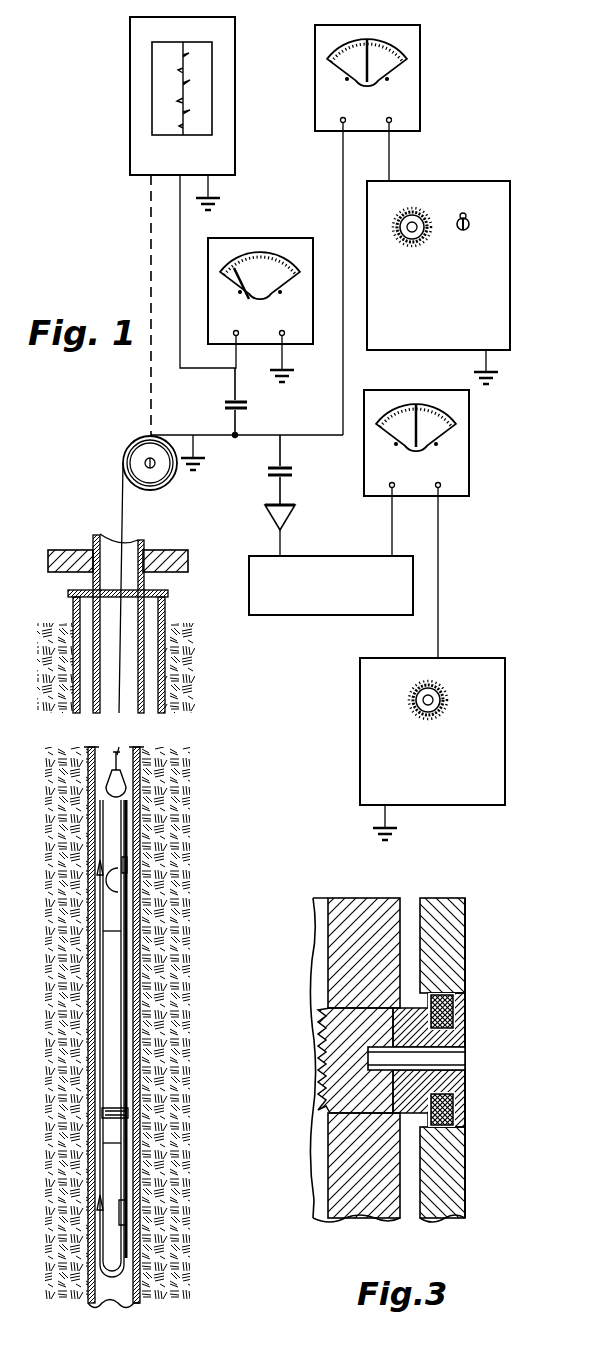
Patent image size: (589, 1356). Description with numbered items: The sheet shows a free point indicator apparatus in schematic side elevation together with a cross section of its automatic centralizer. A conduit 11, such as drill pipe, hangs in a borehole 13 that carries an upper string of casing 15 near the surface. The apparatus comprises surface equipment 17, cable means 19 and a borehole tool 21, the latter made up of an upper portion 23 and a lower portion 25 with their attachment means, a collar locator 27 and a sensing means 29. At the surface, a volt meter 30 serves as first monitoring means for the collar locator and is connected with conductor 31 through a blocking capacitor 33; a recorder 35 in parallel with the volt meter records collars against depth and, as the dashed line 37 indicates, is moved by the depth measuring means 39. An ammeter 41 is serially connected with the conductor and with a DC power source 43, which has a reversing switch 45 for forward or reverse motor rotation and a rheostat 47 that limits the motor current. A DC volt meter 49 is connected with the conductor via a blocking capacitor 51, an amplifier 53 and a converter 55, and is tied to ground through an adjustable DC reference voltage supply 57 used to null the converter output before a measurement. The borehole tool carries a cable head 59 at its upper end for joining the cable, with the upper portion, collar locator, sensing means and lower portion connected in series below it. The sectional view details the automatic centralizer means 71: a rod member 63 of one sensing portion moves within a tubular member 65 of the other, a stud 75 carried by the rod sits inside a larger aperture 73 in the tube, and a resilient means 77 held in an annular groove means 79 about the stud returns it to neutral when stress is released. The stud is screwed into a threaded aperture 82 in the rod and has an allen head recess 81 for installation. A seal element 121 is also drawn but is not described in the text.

In FIG. 1, the conduit 11 is at (145, 756).
In FIG. 1, the borehole 13 is at (145, 850).
In FIG. 1, the casing 15 is at (75, 714).
In FIG. 1, the surface equipment 17 is at (118, 403).
In FIG. 1, the cable means 19 is at (110, 499).
In FIG. 1, the borehole tool 21 is at (130, 1006).
In FIG. 1, the upper portion 23 is at (127, 918).
In FIG. 1, the lower portion 25 is at (115, 1168).
In FIG. 1, the collar locator 27 is at (112, 968).
In FIG. 1, the sensing means 29 is at (115, 1083).
In FIG. 1, the volt meter 30 is at (272, 240).
In FIG. 1, the conductor 31 is at (222, 434).
In FIG. 1, the blocking capacitor 33 is at (224, 400).
In FIG. 1, the recorder 35 is at (130, 60).
In FIG. 1, the dashed line 37 is at (149, 212).
In FIG. 1, the depth measuring means 39 is at (158, 471).
In FIG. 1, the ammeter 41 is at (419, 62).
In FIG. 1, the DC power source 43 is at (508, 181).
In FIG. 1, the reversing switch 45 is at (470, 222).
In FIG. 1, the rheostat 47 is at (412, 215).
In FIG. 1, the DC volt meter 49 is at (466, 448).
In FIG. 1, the blocking capacitor 51 is at (283, 465).
In FIG. 1, the amplifier 53 is at (290, 518).
In FIG. 1, the converter 55 is at (327, 616).
In FIG. 1, the DC reference voltage supply 57 is at (488, 658).
In FIG. 1, the cable head 59 is at (125, 786).
In FIG. 3, the rod member 63 is at (345, 898).
In FIG. 3, the tubular member 65 is at (440, 905).
In FIG. 3, the automatic centralizer means 71 is at (504, 1057).
In FIG. 3, the aperture 73 is at (458, 1005).
In FIG. 3, the stud 75 is at (462, 1087).
In FIG. 3, the resilient means 77 is at (462, 1112).
In FIG. 3, the annular groove means 79 is at (462, 1020).
In FIG. 3, the allen head recess 81 is at (445, 1060).
In FIG. 3, the threaded aperture 82 is at (325, 1036).
In FIG. 1, the seal 121 is at (122, 900).